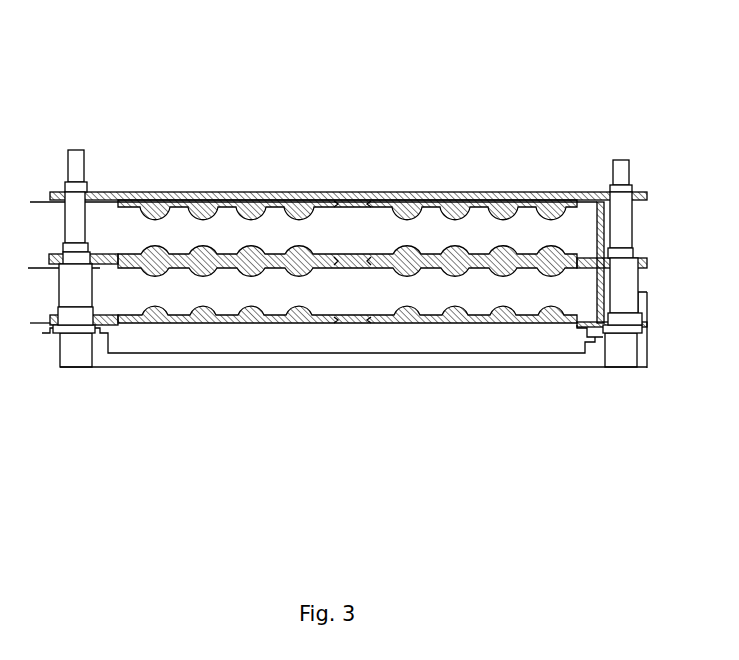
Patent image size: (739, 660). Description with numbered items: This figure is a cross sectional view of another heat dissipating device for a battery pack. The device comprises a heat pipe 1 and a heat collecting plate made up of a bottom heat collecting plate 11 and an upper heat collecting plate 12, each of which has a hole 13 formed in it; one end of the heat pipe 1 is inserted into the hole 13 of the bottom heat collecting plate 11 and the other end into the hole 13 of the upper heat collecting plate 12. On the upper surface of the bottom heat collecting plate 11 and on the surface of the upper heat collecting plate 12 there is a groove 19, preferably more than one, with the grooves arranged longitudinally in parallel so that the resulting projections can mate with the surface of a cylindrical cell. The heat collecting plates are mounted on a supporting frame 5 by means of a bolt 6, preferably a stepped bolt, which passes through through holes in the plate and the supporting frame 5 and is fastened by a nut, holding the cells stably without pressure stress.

The heat pipe 1 is at (433, 197).
The supporting frame 5 is at (598, 353).
The bolt 6 is at (620, 172).
The bottom heat collecting plate 11 is at (299, 328).
The upper heat collecting plate 12 is at (158, 255).
The hole 13 is at (513, 328).
The groove 19 is at (228, 313).